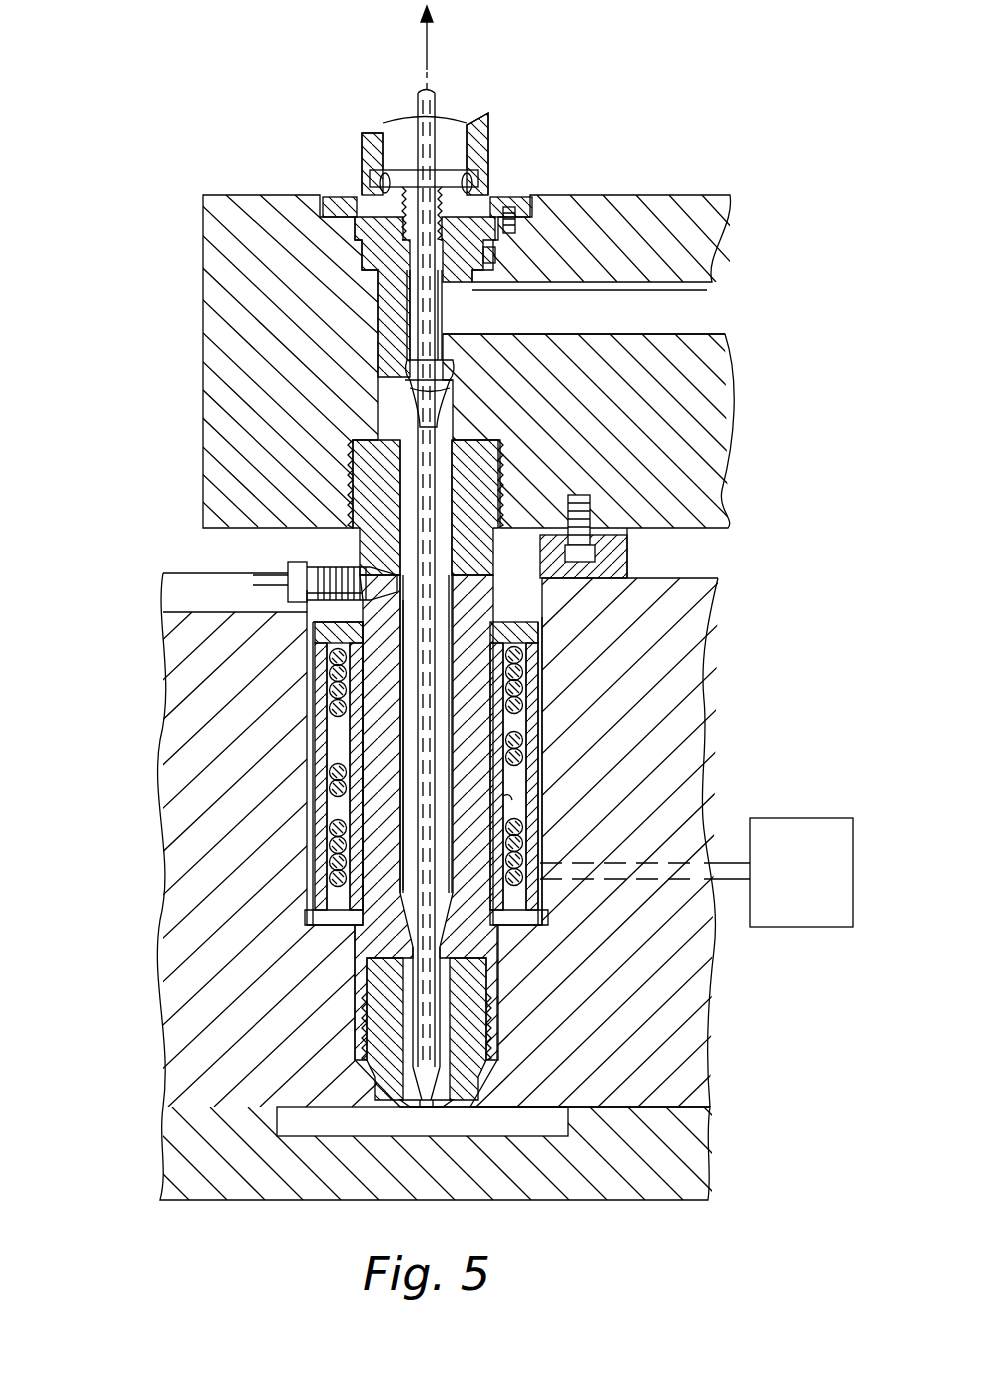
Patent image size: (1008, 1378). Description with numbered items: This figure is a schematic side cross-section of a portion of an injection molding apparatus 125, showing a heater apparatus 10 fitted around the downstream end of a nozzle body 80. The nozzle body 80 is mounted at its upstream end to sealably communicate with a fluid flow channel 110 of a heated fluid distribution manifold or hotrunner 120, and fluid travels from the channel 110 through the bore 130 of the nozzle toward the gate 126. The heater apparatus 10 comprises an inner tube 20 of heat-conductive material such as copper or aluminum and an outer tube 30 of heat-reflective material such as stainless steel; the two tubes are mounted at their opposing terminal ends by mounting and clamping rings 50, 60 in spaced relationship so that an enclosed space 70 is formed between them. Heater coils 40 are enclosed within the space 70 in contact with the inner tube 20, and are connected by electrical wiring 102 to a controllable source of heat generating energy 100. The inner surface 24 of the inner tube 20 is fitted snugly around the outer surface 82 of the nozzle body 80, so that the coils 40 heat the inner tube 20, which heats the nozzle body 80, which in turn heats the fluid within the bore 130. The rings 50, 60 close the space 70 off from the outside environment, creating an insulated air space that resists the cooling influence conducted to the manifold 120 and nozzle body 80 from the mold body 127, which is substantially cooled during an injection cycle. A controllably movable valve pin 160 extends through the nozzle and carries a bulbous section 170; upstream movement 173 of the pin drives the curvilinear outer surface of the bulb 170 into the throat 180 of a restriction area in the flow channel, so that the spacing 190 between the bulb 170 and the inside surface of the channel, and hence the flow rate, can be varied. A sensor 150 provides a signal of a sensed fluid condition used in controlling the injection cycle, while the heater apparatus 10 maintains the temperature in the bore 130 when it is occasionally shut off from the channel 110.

The heater apparatus 10 is at (312, 855).
The inner tube 20 is at (508, 722).
The inner surface of inner tube 24 is at (536, 804).
The outer tube 30 is at (535, 742).
The heater coils 40 is at (522, 692).
The mounting and clamping ring 50 is at (545, 625).
The mounting and clamping ring 60 is at (485, 925).
The enclosed space 70 is at (518, 774).
The nozzle body 80 is at (378, 741).
The outer surface of nozzle body 82 is at (360, 798).
The source of heat generating energy 100 is at (822, 893).
The electrical wiring 102 is at (730, 887).
The fluid flow channel 110 is at (700, 314).
The heated fluid distribution manifold 120 is at (722, 535).
The injection molding apparatus 125 is at (694, 148).
The gate 126 is at (428, 1107).
The mold body 127 is at (690, 1147).
The bore of nozzle 130 is at (411, 714).
The sensor 150 is at (288, 566).
The valve pin 160 is at (416, 108).
The bulbous section 170 is at (420, 405).
The upstream movement 173 is at (432, 52).
The throat 180 is at (410, 364).
The spacing 190 is at (425, 386).